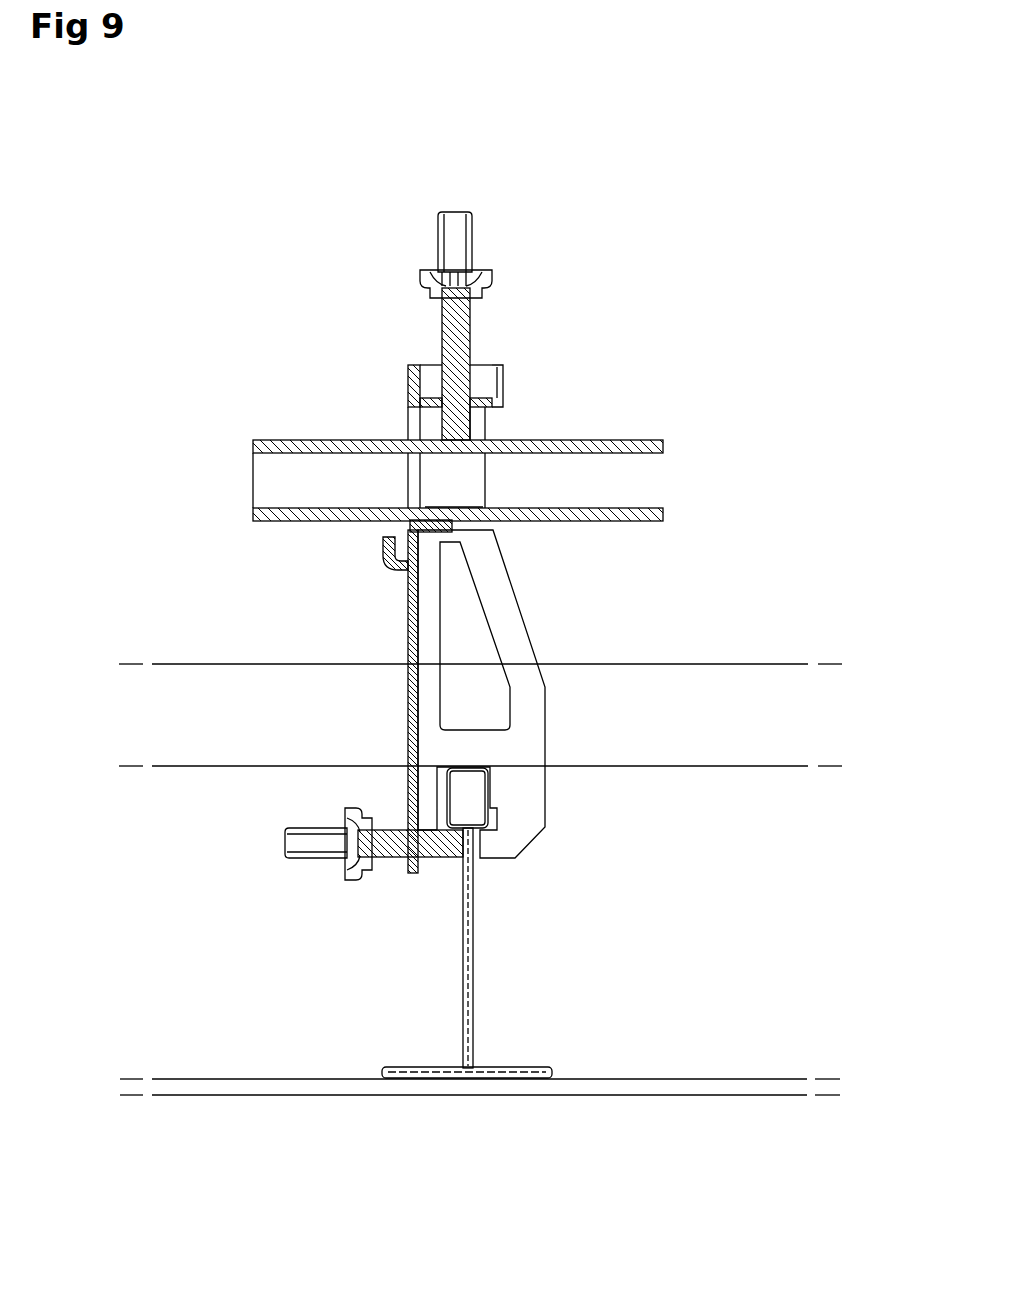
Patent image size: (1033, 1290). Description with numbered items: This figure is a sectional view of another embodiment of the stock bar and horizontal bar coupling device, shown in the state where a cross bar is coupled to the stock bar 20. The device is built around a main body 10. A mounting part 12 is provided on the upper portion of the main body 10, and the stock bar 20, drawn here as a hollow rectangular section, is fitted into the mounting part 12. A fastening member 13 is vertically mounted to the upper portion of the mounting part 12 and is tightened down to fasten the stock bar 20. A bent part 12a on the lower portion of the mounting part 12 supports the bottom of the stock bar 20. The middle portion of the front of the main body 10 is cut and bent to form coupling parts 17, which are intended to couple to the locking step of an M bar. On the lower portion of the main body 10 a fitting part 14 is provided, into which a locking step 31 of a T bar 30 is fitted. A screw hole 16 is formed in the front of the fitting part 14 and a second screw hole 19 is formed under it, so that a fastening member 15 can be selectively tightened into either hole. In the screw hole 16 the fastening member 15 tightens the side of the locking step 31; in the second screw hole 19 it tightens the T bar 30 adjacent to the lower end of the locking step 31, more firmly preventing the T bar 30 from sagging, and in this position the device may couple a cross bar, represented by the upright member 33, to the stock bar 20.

The main body 10 is at (400, 370).
The mounting part 12 is at (427, 425).
The bent part 12a is at (452, 527).
The fastening member 13 is at (460, 225).
The fitting part 14 is at (475, 848).
The fastening member 15 is at (307, 845).
The screw hole 16 is at (410, 795).
The coupling parts 17 is at (383, 540).
The second screw hole 19 is at (408, 860).
The stock bar 20 is at (580, 438).
The T bar 30 is at (705, 992).
The locking step 31 is at (763, 693).
The post 33 is at (473, 930).